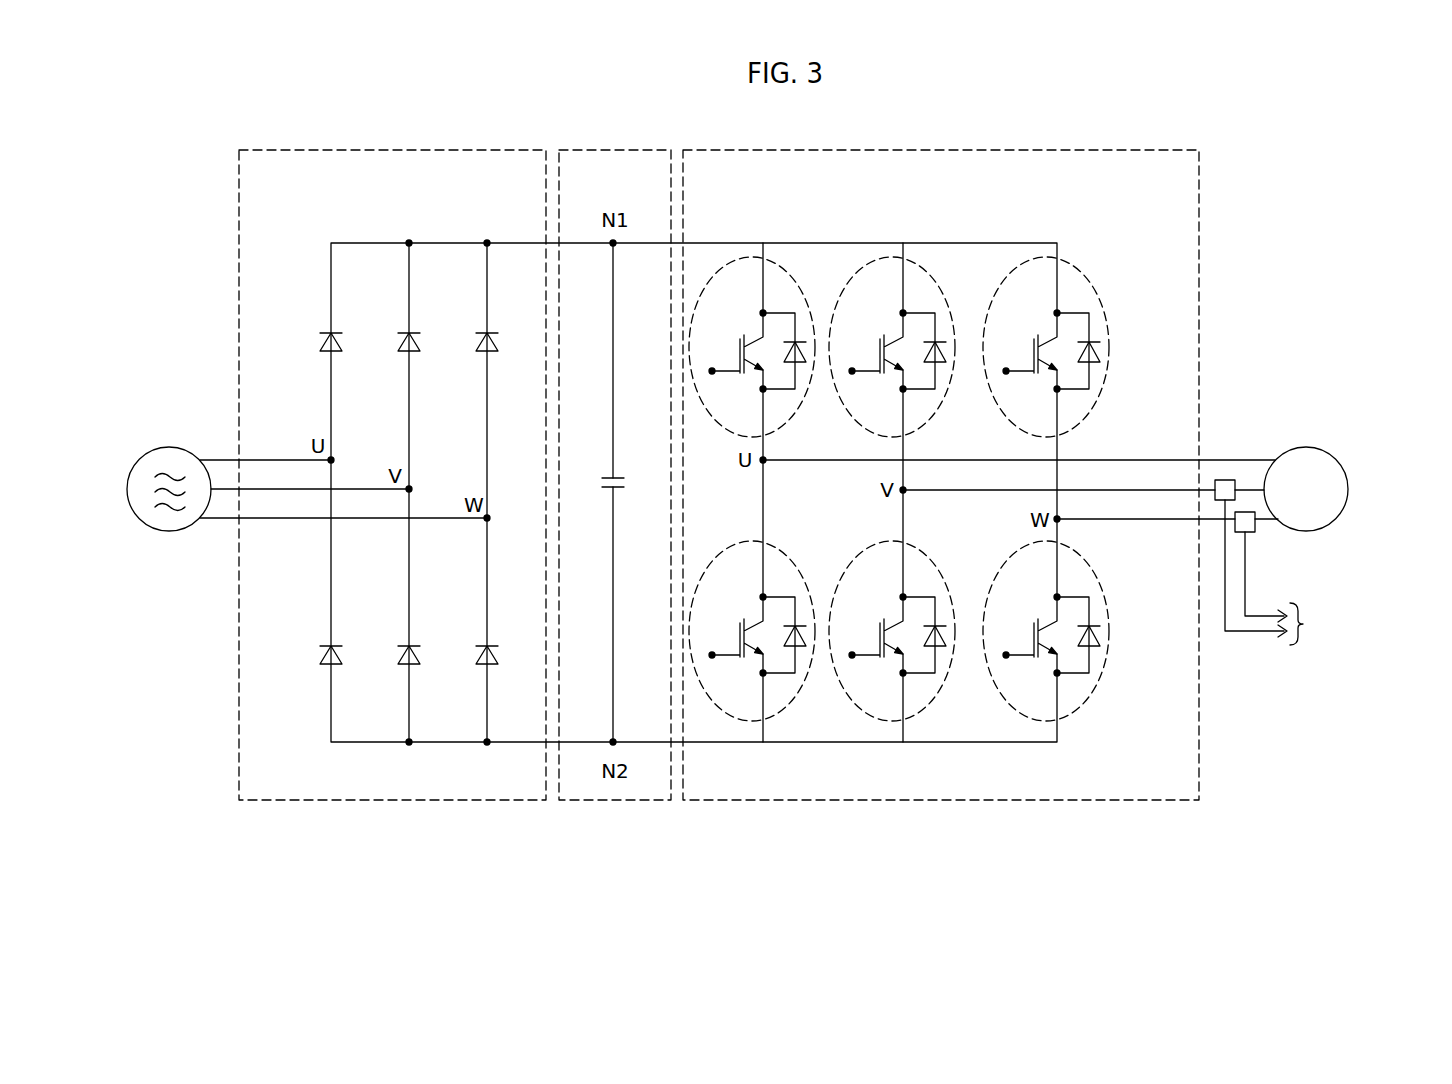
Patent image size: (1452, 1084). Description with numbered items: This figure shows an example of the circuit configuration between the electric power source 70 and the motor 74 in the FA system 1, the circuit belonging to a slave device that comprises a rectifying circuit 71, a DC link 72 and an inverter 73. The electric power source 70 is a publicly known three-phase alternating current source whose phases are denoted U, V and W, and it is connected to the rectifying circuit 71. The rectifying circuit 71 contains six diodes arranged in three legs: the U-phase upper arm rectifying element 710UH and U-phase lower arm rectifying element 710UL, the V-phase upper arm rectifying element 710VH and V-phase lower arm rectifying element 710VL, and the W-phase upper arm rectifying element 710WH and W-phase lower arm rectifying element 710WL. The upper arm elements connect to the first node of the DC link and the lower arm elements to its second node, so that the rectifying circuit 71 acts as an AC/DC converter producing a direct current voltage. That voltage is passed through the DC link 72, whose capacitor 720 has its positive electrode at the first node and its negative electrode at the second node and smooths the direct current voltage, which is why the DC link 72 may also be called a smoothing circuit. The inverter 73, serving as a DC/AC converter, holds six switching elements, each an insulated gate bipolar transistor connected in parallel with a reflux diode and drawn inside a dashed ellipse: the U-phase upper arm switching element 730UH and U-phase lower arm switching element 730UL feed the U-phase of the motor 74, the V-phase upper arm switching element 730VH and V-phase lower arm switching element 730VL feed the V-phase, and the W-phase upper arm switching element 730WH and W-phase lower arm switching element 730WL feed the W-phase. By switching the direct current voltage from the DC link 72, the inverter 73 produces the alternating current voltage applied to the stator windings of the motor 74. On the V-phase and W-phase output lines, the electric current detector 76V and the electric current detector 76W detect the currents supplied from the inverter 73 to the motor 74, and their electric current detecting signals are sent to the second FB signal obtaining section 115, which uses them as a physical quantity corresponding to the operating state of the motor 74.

The FA system 1 is at (757, 454).
The electric power source 70 is at (170, 447).
The rectifying circuit 71 is at (403, 149).
The DC link 72 is at (615, 149).
The inverter 73 is at (866, 149).
The motor 74 is at (1305, 447).
The electric current detector 76V is at (1228, 480).
The electric current detector 76W is at (1245, 512).
The U-phase upper arm rectifying element 710UH is at (320, 344).
The V-phase upper arm rectifying element 710VH is at (398, 344).
The W-phase upper arm rectifying element 710WH is at (476, 344).
The U-phase lower arm rectifying element 710UL is at (320, 657).
The V-phase lower arm rectifying element 710VL is at (398, 657).
The W-phase lower arm rectifying element 710WL is at (476, 657).
The capacitor 720 is at (612, 478).
The U-phase upper arm switching element 730UH is at (808, 287).
The V-phase upper arm switching element 730VH is at (954, 290).
The W-phase upper arm switching element 730WH is at (1113, 334).
The U-phase lower arm switching element 730UL is at (797, 568).
The V-phase lower arm switching element 730VL is at (955, 591).
The W-phase lower arm switching element 730WL is at (1110, 621).
The second FB signal obtaining section 115 is at (1364, 653).